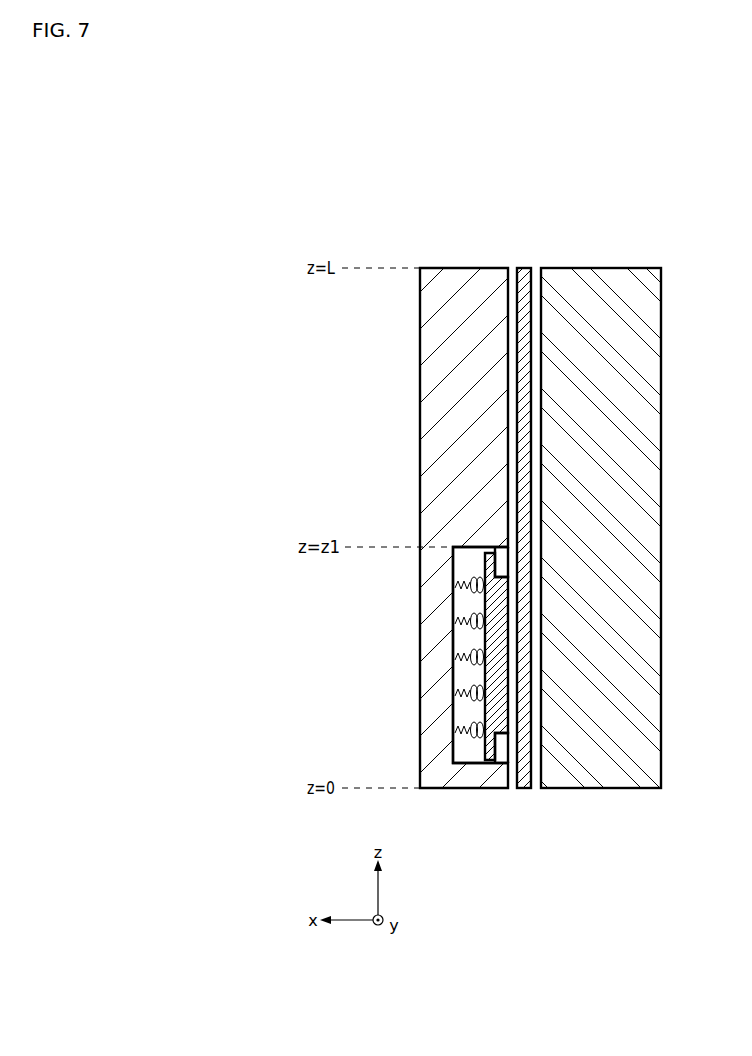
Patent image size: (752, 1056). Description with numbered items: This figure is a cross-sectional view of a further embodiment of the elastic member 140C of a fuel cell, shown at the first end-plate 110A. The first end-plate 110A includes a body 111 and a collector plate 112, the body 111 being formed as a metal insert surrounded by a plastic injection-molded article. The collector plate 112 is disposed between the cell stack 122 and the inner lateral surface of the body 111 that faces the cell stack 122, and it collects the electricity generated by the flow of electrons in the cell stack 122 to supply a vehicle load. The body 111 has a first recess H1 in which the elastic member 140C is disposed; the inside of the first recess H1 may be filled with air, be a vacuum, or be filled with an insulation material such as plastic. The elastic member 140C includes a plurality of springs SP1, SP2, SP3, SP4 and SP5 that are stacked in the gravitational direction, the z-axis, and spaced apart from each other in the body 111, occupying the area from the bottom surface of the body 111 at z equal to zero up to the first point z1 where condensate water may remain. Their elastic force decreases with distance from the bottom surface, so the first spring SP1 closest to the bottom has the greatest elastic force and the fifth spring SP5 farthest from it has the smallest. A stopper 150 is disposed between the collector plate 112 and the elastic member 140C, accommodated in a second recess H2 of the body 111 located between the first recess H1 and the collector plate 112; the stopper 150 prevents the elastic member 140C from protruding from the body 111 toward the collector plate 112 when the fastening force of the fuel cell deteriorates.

The first end-plate 110A is at (478, 483).
The body 111 is at (464, 268).
The collector plate 112 is at (523, 505).
The cell stack 122 is at (600, 268).
The elastic member 140C is at (398, 659).
The first spring SP1 is at (432, 731).
The second spring SP2 is at (456, 693).
The third spring SP3 is at (456, 657).
The fourth spring SP4 is at (456, 621).
The fifth spring SP5 is at (456, 585).
The stopper 150 is at (498, 708).
The first recess H1 is at (462, 765).
The second recess H2 is at (487, 765).